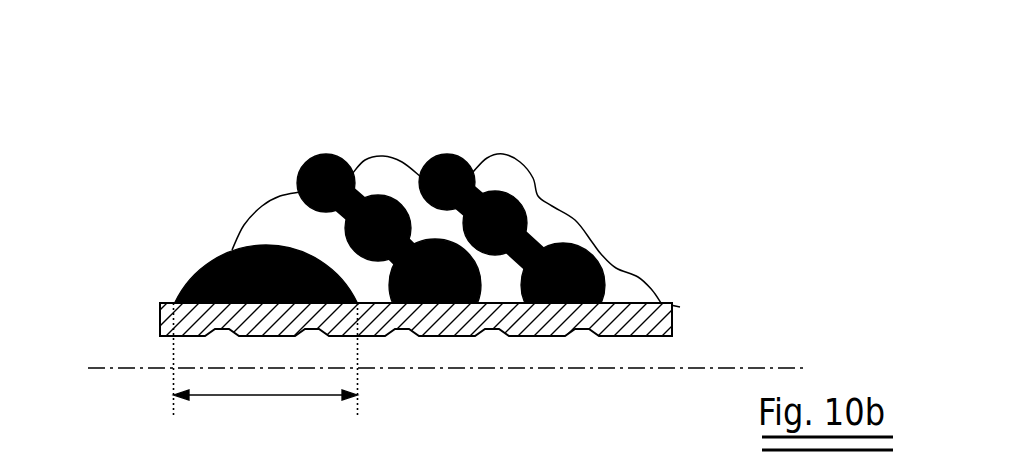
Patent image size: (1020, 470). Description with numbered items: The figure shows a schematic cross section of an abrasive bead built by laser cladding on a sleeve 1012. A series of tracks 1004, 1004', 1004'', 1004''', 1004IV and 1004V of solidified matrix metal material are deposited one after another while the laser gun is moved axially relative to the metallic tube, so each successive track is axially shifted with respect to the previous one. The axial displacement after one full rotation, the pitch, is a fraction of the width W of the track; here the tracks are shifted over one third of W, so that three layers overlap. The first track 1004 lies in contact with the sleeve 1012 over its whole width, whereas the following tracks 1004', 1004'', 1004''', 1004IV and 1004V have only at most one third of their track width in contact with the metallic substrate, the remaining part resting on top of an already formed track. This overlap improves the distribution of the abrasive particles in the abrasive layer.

The track 1004 is at (206, 258).
The track 1004' is at (198, 206).
The track 1004'' is at (312, 223).
The track 1004''' is at (456, 138).
The track 1004IV is at (512, 238).
The track 1004V is at (618, 285).
The sleeve 1012 is at (187, 315).
The width of the track W is at (266, 373).